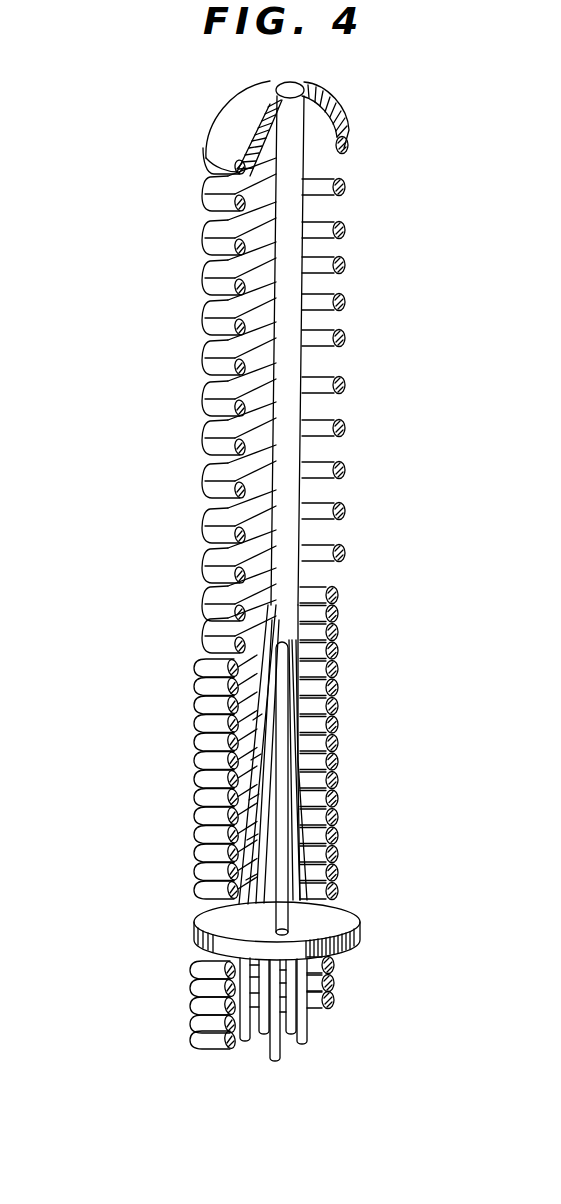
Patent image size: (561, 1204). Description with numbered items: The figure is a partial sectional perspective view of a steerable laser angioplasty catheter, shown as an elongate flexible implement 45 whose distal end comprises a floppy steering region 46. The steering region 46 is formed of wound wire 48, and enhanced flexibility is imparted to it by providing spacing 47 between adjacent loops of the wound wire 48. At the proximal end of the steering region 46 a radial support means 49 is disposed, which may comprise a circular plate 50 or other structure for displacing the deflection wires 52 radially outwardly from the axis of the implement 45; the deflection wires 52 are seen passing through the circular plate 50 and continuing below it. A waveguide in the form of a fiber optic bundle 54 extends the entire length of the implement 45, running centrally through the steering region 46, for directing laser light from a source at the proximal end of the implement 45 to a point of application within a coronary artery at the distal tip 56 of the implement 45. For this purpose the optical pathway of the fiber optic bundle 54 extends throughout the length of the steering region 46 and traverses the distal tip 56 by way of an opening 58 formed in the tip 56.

The elongate flexible implement 45 is at (168, 977).
The floppy steering region 46 is at (365, 138).
The spacing 47 is at (208, 465).
The wound wire 48 is at (197, 318).
The radial support means 49 is at (380, 920).
The circular plate 50 is at (363, 938).
The deflection wires 52 is at (280, 1047).
The fiber optic bundle 54 is at (287, 270).
The distal tip 56 is at (248, 104).
The opening 58 is at (315, 74).